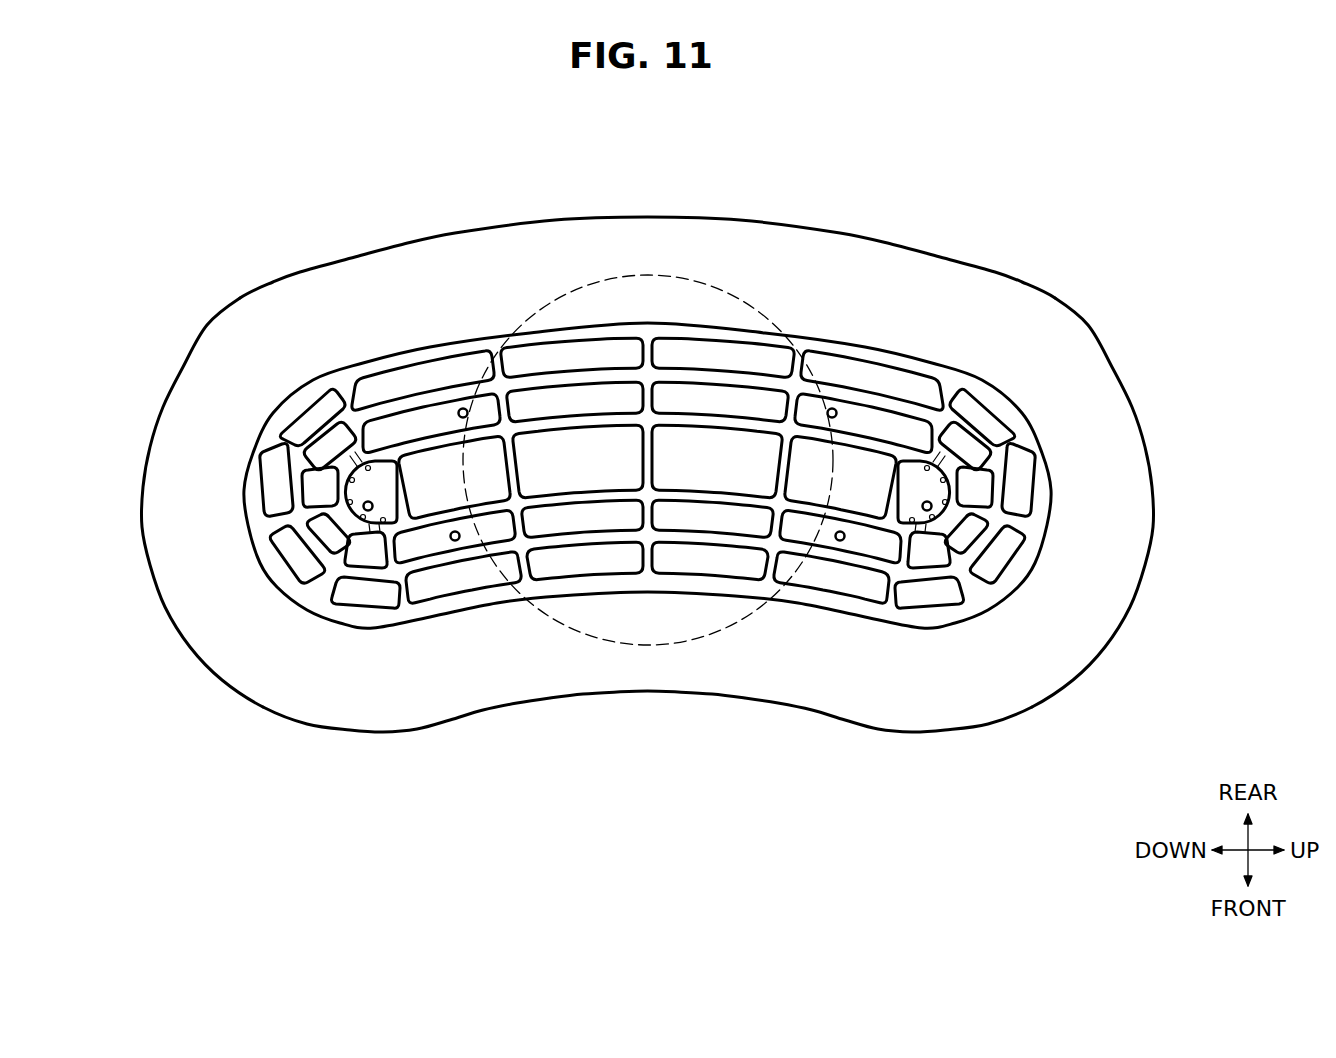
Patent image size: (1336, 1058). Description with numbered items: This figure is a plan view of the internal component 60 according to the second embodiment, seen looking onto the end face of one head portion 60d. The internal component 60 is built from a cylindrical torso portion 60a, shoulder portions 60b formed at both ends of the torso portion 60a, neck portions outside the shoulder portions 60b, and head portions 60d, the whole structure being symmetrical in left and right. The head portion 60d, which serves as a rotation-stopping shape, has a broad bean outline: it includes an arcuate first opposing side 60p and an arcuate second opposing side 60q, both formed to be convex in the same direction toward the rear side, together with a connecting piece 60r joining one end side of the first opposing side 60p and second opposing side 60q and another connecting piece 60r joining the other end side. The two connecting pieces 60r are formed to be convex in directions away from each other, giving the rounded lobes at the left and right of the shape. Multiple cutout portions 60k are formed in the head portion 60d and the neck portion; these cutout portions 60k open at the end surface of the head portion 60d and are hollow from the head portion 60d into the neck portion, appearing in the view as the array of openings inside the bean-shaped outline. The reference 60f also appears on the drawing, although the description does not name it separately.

The internal component 60 is at (996, 183).
The torso portion 60a is at (762, 612).
The shoulder portion 60b is at (1106, 345).
The head portion 60d is at (245, 467).
The front edge of pad 60f is at (980, 682).
The cutout portion 60k is at (430, 500).
The first opposing side 60p is at (648, 597).
The second opposing side 60q is at (648, 320).
The connecting piece 60r is at (247, 530).